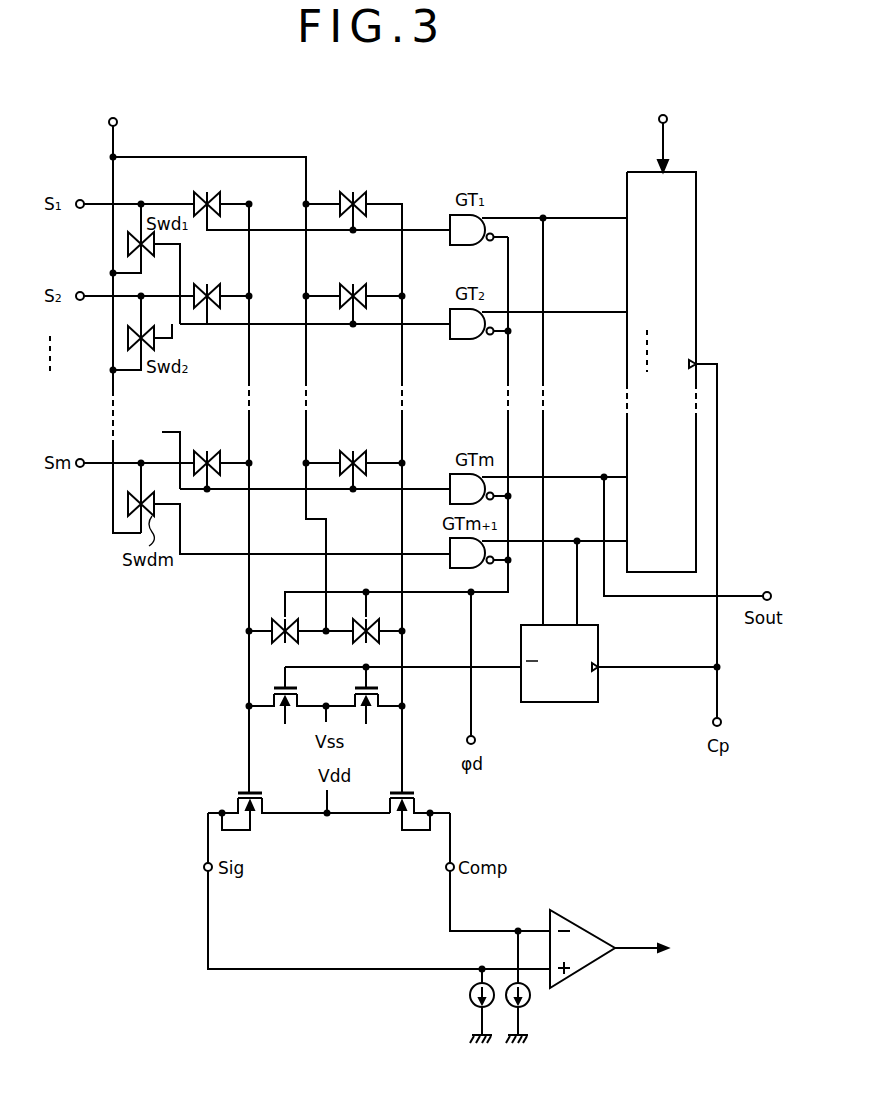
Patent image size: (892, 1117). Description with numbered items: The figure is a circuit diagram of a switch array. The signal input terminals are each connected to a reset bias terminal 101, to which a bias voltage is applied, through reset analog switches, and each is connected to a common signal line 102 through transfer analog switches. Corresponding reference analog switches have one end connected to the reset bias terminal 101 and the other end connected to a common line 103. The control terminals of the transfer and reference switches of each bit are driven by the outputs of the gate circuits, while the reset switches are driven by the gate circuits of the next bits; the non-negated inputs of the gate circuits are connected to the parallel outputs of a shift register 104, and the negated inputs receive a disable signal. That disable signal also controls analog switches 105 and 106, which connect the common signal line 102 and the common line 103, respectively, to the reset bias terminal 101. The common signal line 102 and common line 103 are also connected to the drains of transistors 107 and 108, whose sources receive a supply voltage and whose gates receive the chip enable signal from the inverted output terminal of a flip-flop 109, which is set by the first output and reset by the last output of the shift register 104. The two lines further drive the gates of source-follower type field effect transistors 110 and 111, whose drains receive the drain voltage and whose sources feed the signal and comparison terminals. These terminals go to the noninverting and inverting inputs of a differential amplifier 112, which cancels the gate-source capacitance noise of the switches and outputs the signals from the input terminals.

The reset bias terminal 101 is at (118, 122).
The common signal line 102 is at (249, 410).
The common line 103 is at (402, 410).
The shift register 104 is at (696, 222).
The analog switch 105 is at (272, 627).
The analog switch 106 is at (379, 637).
The transistor 107 is at (274, 692).
The transistor 108 is at (378, 694).
The flip-flop 109 is at (570, 702).
The source-follower type field effect transistor 110 is at (238, 793).
The source-follower type field effect transistor 111 is at (414, 793).
The differential amplifier 112 is at (585, 926).